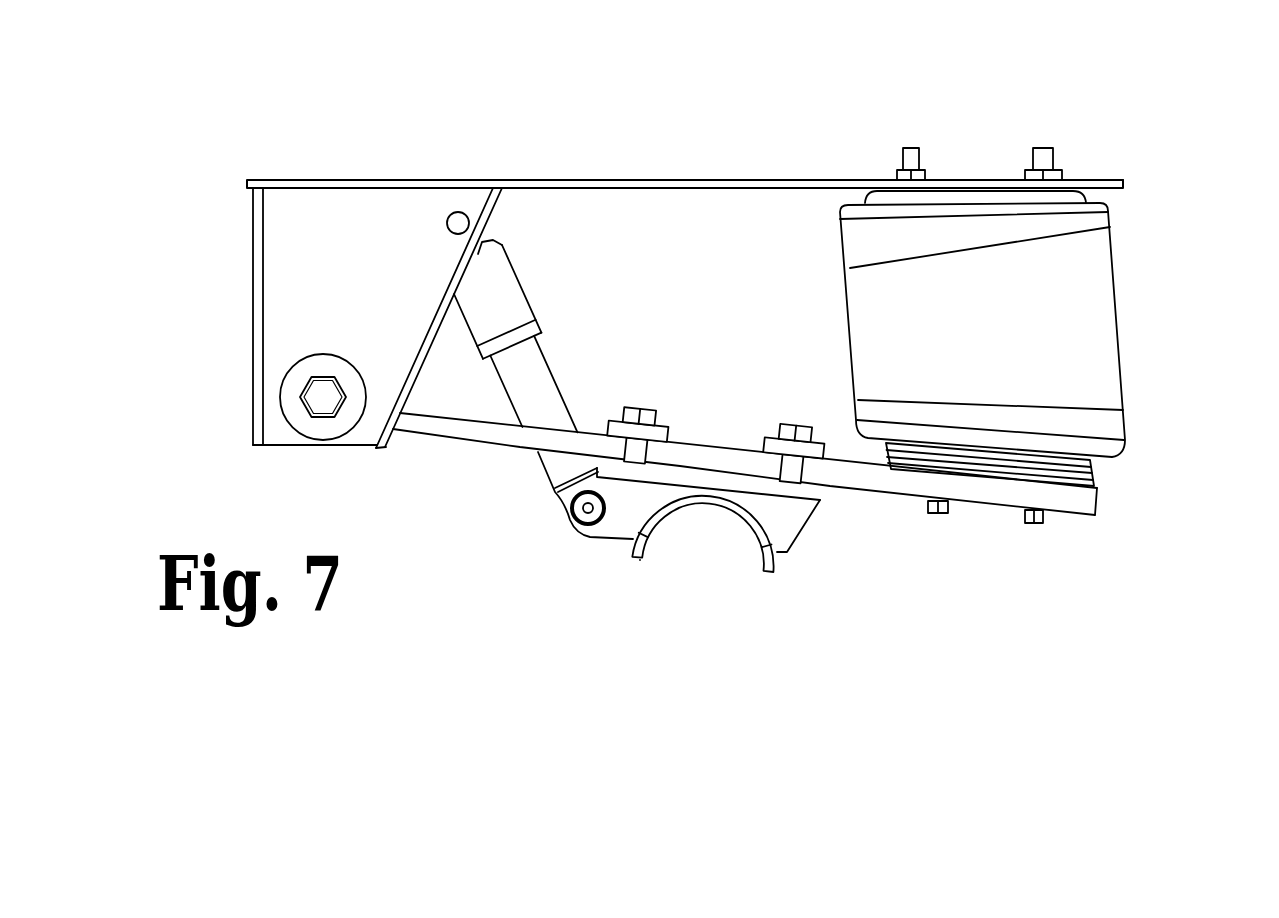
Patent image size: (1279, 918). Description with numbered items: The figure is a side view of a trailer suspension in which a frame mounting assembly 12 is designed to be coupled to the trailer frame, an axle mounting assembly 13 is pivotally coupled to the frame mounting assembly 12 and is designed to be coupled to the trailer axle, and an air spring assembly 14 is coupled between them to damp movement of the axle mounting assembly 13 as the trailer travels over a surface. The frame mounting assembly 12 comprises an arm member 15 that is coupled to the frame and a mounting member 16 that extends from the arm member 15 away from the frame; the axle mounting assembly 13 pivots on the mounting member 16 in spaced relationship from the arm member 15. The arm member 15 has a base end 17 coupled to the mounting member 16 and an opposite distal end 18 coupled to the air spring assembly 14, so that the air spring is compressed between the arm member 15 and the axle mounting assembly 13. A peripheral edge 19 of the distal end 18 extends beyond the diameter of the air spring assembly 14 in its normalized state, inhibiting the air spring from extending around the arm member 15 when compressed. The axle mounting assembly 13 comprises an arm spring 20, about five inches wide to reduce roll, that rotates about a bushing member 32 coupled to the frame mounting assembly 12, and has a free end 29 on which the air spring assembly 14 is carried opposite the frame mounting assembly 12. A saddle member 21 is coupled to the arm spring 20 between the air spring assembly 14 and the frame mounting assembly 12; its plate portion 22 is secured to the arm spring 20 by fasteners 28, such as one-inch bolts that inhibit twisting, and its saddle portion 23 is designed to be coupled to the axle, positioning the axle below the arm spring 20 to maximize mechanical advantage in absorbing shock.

The frame mounting assembly 12 is at (237, 143).
The axle mounting assembly 13 is at (623, 572).
The air spring assembly 14 is at (1165, 307).
The arm member 15 is at (728, 180).
The mounting member 16 is at (315, 312).
The base end 17 is at (267, 176).
The distal end 18 is at (977, 178).
The peripheral edge 19 is at (1125, 183).
The arm spring 20 is at (468, 433).
The saddle member 21 is at (795, 528).
The plate portion 22 is at (820, 500).
The saddle portion 23 is at (750, 512).
The fasteners 28 is at (634, 410).
The free end 29 is at (1097, 500).
The bushing member 32 is at (553, 268).